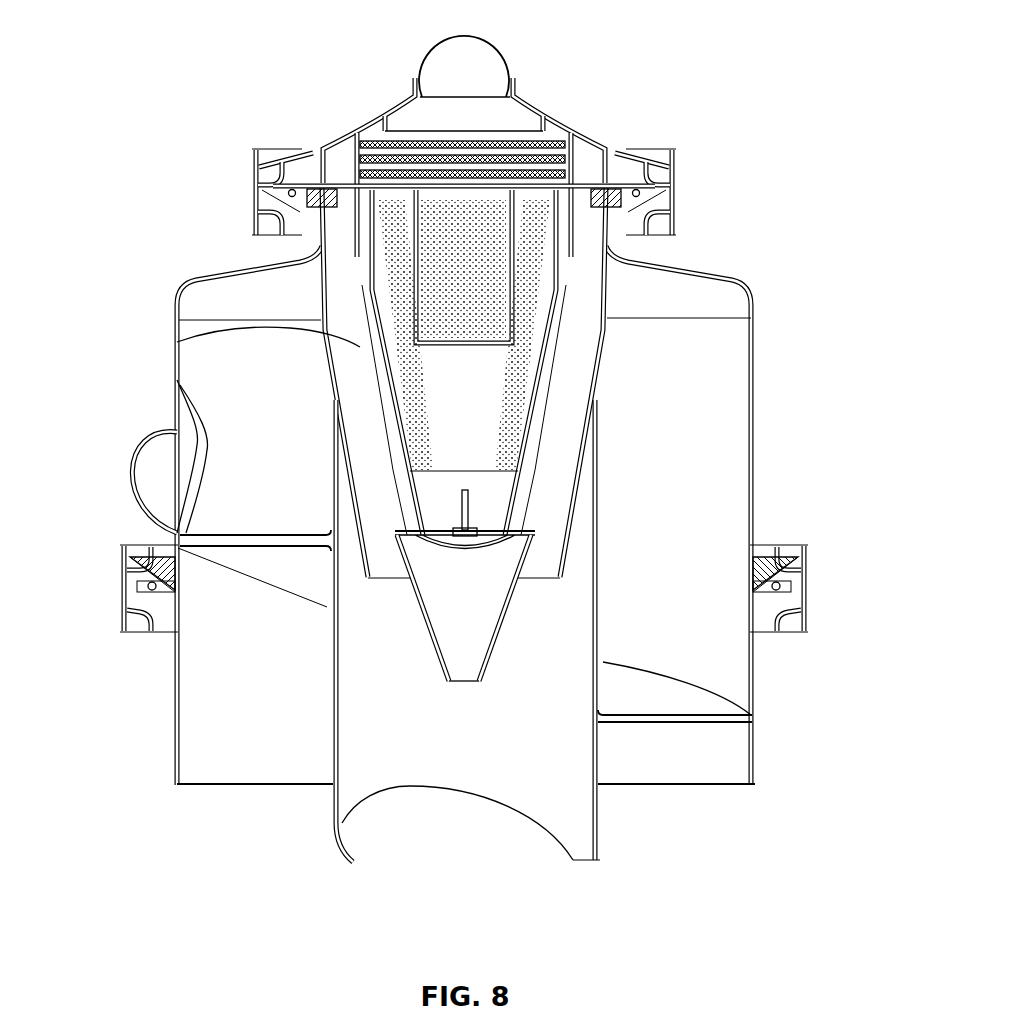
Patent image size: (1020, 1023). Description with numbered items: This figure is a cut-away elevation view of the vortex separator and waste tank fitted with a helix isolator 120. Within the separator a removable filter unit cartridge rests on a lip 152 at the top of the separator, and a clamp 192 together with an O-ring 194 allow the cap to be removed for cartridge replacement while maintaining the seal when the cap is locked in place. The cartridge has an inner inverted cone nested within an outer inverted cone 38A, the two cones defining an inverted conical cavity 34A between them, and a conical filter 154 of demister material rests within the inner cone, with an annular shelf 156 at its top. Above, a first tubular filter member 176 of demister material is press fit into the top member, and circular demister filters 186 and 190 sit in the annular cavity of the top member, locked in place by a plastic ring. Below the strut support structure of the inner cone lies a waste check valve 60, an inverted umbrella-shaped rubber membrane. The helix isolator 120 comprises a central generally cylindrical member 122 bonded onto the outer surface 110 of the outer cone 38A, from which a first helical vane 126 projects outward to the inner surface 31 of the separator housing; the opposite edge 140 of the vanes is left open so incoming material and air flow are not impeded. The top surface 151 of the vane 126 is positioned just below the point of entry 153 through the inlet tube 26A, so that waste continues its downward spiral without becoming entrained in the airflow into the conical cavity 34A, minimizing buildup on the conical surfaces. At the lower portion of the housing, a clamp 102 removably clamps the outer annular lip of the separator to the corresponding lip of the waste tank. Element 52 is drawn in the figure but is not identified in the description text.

The outer surface 110 is at (311, 369).
The inverted conical cavity 34A is at (177, 340).
The outer inverted cone 38A is at (605, 347).
The inlet tube 26A is at (160, 413).
The point of entry 153 is at (190, 526).
The top surface 151 is at (231, 533).
The opposite edge 140 is at (289, 533).
The first helical vane 126 is at (277, 575).
The inner surface 31 is at (178, 749).
The central generally cylindrical member 122 is at (601, 828).
The helix isolator 120 is at (622, 638).
The clamp 102 is at (770, 603).
The lip 152 is at (315, 178).
The clamp 192 is at (661, 152).
The O-ring 194 is at (647, 195).
The annular shelf 156 is at (590, 198).
The circular demister filter 186 is at (548, 142).
The circular demister filter 190 is at (437, 180).
The first tubular filter member 176 is at (455, 297).
The conical filter 154 is at (413, 444).
The nozzle 52 is at (430, 540).
The waste check valve 60 is at (490, 538).